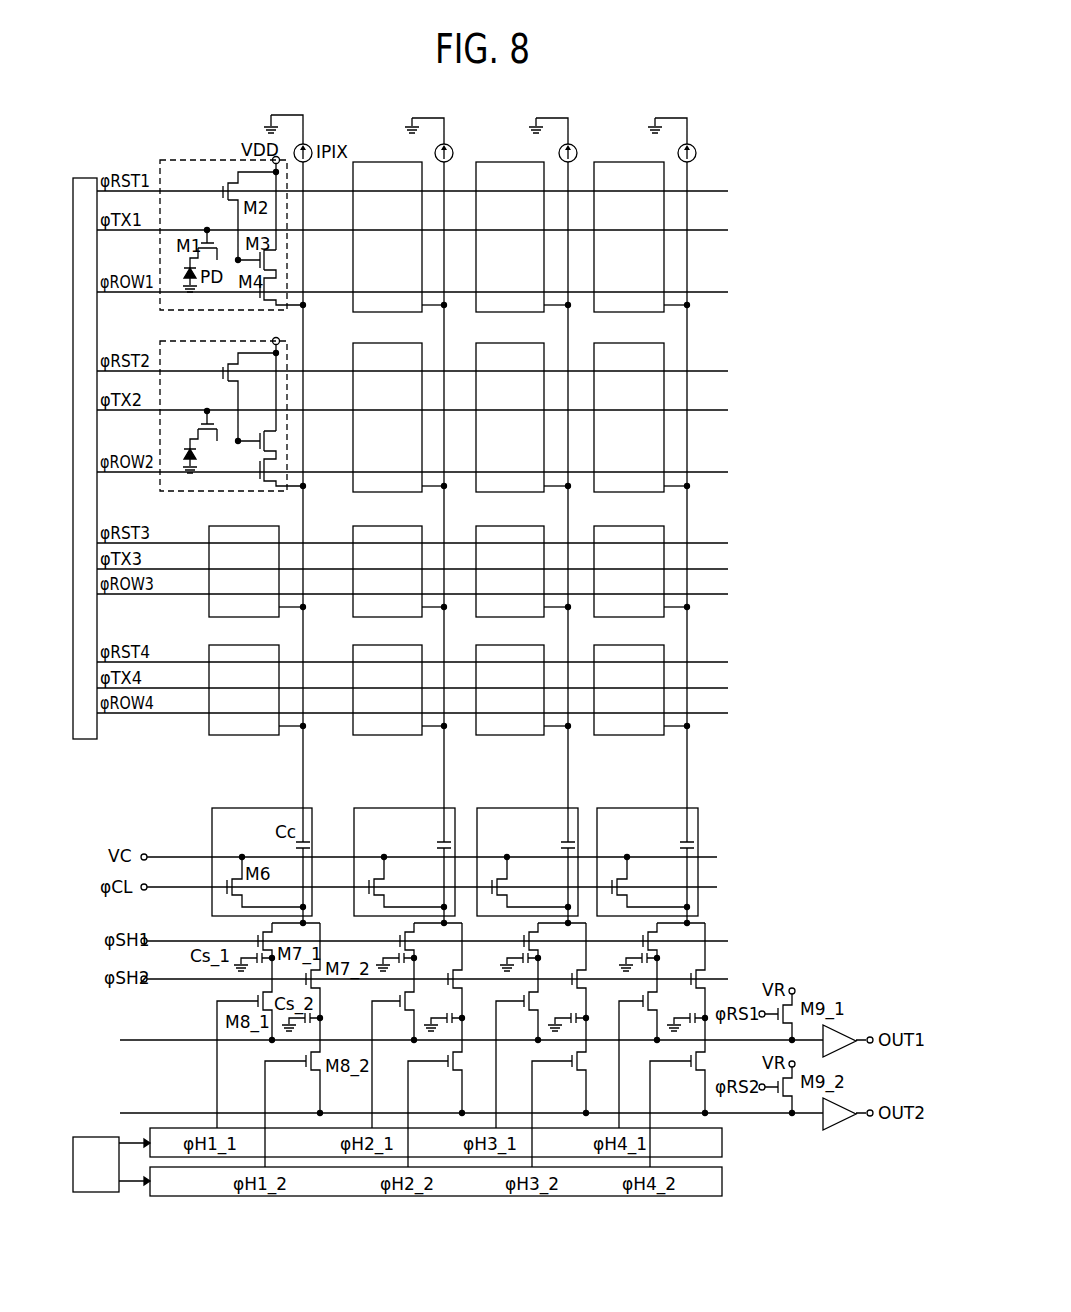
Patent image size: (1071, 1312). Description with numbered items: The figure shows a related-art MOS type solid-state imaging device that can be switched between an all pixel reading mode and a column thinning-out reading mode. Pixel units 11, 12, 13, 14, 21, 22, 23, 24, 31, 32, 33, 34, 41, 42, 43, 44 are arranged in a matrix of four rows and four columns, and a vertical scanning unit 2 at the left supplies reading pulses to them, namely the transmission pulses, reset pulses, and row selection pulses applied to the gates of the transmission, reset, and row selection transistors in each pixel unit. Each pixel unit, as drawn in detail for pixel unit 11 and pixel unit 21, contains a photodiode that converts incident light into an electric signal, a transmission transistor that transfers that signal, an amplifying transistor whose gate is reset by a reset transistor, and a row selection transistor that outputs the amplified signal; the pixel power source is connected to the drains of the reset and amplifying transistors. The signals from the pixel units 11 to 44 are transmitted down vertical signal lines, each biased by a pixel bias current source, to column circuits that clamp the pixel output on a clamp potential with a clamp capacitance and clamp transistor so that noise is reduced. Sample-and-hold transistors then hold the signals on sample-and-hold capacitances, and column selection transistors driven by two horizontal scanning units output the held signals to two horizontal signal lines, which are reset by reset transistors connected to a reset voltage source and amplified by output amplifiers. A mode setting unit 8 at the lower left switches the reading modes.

The vertical scanning unit 2 is at (85, 178).
The mode setting unit 8 is at (96, 1137).
The pixel unit 11 is at (210, 160).
The pixel unit 12 is at (378, 162).
The pixel unit 13 is at (507, 162).
The pixel unit 14 is at (624, 162).
The pixel unit 21 is at (206, 343).
The pixel unit 22 is at (386, 343).
The pixel unit 23 is at (508, 343).
The pixel unit 24 is at (626, 343).
The pixel unit 31 is at (209, 617).
The pixel unit 32 is at (386, 526).
The pixel unit 33 is at (508, 526).
The pixel unit 34 is at (626, 526).
The pixel unit 41 is at (209, 735).
The pixel unit 42 is at (386, 645).
The pixel unit 43 is at (508, 645).
The pixel unit 44 is at (626, 645).